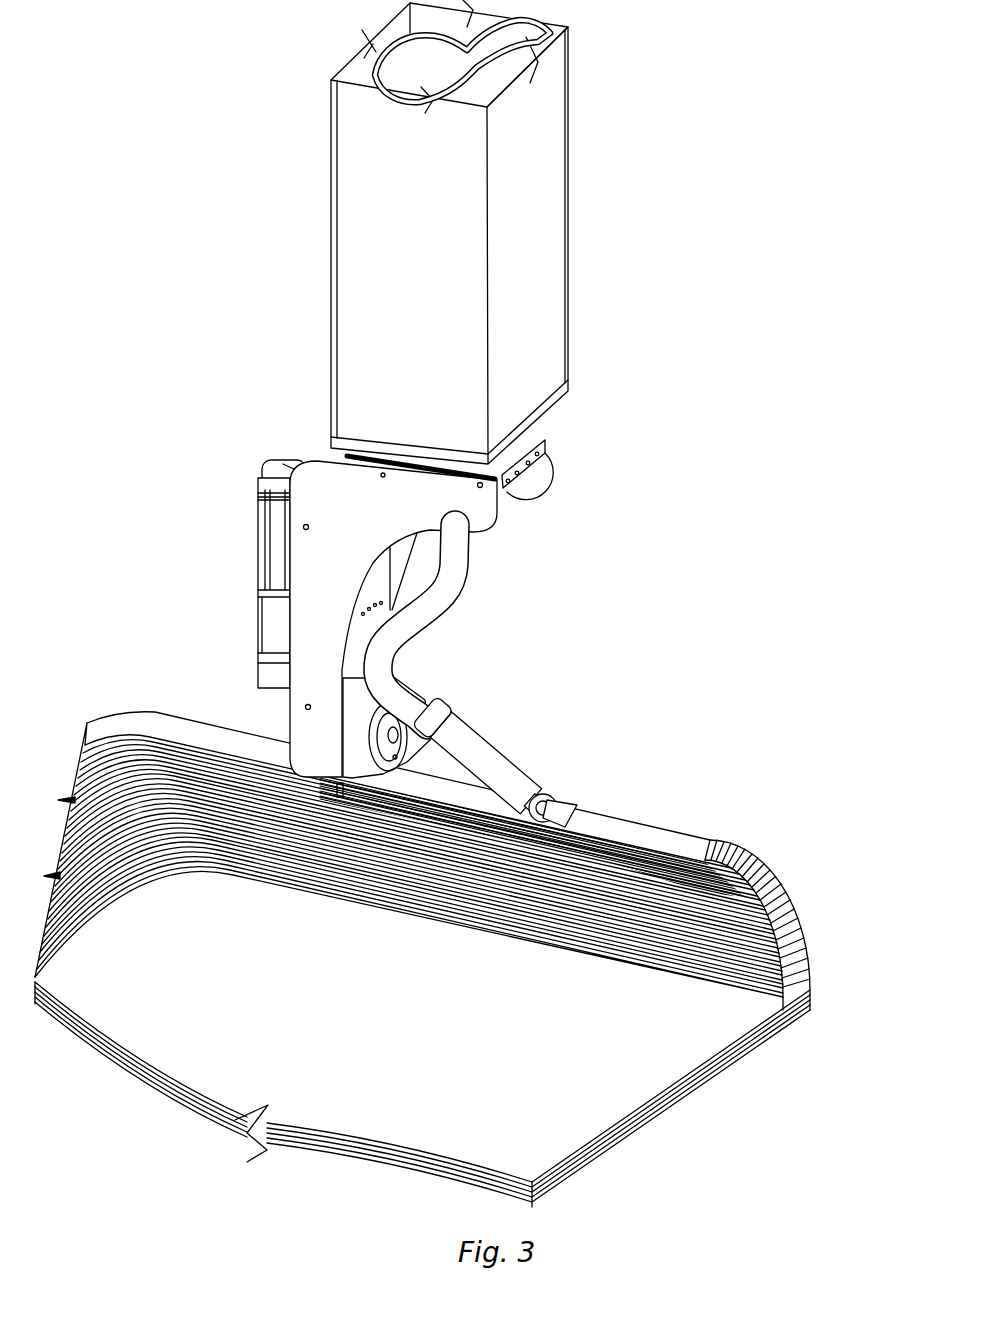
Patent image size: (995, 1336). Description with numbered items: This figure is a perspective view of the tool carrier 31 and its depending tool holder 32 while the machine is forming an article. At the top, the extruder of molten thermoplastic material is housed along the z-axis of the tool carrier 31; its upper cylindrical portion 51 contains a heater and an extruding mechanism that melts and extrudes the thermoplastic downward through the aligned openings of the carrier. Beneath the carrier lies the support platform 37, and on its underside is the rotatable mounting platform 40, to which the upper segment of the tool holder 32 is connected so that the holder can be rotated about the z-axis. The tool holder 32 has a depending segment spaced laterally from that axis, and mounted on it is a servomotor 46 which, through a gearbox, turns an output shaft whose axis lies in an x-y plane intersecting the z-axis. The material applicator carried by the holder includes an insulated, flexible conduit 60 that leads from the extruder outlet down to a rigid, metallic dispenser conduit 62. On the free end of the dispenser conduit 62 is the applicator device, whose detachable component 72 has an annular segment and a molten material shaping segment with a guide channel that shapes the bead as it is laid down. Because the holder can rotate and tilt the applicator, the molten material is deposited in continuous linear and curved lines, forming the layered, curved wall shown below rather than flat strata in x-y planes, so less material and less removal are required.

The tool carrier 31 is at (509, 227).
The upper cylindrical portion 51 is at (527, 37).
The support platform 37 is at (567, 393).
The rotatable mounting platform 40 is at (537, 430).
The servomotor 46 is at (262, 523).
The tool holder 32 is at (303, 631).
The flexible conduit 60 is at (465, 580).
The dispenser conduit 62 is at (497, 740).
The detachable component 72 is at (563, 800).